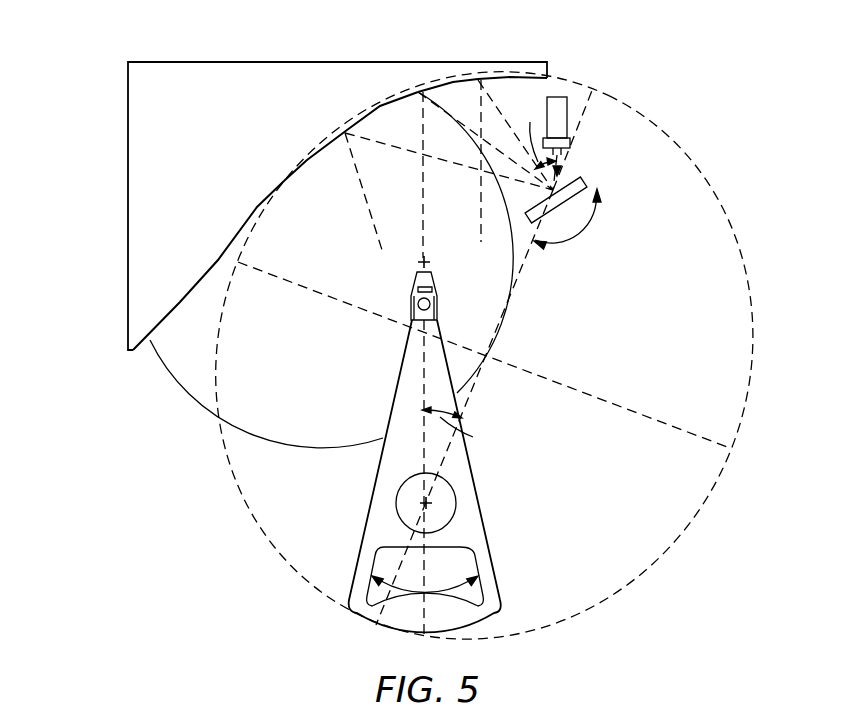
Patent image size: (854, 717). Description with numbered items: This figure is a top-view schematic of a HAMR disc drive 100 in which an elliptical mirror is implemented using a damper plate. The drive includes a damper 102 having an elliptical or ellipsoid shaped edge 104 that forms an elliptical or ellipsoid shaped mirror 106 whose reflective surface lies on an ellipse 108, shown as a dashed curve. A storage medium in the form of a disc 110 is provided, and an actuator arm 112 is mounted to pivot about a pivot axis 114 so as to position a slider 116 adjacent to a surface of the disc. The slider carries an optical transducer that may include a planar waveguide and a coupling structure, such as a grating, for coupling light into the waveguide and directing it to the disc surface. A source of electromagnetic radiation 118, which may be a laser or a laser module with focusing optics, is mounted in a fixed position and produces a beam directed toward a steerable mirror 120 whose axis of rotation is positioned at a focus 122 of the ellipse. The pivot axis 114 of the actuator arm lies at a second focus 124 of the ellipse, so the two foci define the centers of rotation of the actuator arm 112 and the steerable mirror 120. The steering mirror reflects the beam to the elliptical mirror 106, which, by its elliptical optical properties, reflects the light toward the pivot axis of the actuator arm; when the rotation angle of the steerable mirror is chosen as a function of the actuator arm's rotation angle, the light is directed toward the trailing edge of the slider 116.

The HAMR disc drive 100 is at (160, 478).
The damper 102 is at (128, 207).
The elliptical or ellipsoid shaped edge 104 is at (357, 115).
The elliptical or ellipsoid shaped mirror 106 is at (458, 77).
The ellipse 108 is at (701, 175).
The disc 110 is at (187, 363).
The actuator arm 112 is at (487, 537).
The pivot axis 114 is at (433, 506).
The slider 116 is at (430, 263).
The source of electromagnetic radiation 118 is at (562, 98).
The steerable mirror 120 is at (578, 180).
The focus 122 is at (582, 233).
The second focus 124 is at (424, 503).